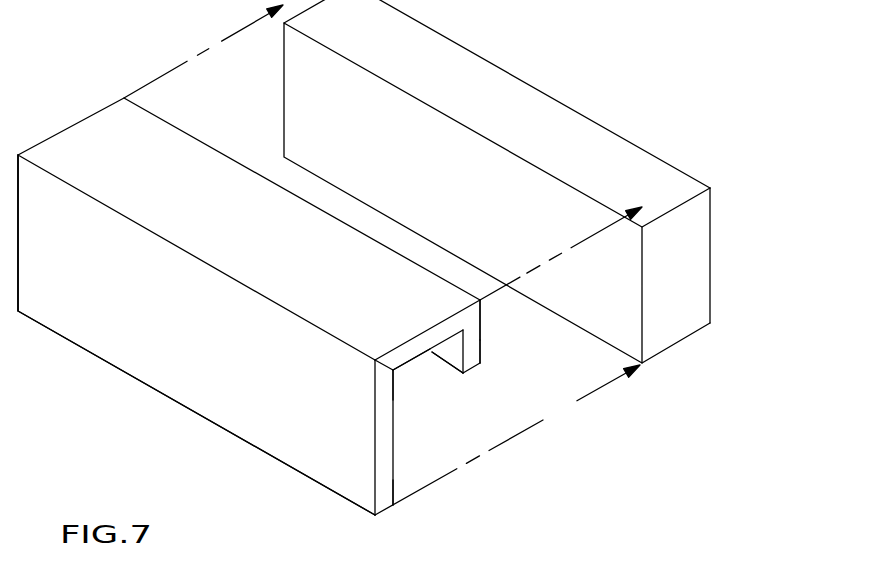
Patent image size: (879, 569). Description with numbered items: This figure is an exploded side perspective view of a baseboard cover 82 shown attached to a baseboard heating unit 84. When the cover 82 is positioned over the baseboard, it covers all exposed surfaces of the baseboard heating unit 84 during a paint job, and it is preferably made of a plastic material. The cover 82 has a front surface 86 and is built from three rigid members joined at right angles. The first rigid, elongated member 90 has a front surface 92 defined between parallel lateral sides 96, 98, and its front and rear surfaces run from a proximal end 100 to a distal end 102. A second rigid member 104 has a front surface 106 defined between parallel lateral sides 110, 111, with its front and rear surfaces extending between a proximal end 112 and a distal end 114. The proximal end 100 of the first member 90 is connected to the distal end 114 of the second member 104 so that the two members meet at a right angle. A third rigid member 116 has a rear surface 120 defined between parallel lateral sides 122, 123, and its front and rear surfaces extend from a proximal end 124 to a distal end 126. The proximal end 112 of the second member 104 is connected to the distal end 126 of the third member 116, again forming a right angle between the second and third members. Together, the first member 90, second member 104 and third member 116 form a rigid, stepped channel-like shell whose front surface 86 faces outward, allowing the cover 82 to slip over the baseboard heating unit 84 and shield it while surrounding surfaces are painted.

The baseboard cover 82 is at (177, 447).
The baseboard heating unit 84 is at (465, 77).
The front surface 86 is at (100, 408).
The first rigid, elongated member 90 is at (382, 457).
The front surface 92 is at (262, 413).
The lateral side 96 is at (377, 440).
The lateral side 98 is at (393, 480).
The proximal end 100 is at (383, 374).
The distal end 102 is at (383, 500).
The second rigid member 104 is at (417, 352).
The front surface 106 is at (160, 163).
The lateral side 110 is at (390, 350).
The lateral side 111 is at (413, 365).
The proximal end 112 is at (468, 302).
The distal end 114 is at (374, 360).
The third rigid member 116 is at (481, 345).
The rear surface 120 is at (447, 357).
The lateral side 122 is at (448, 355).
The lateral side 123 is at (481, 325).
The proximal end 124 is at (478, 365).
The distal end 126 is at (470, 320).